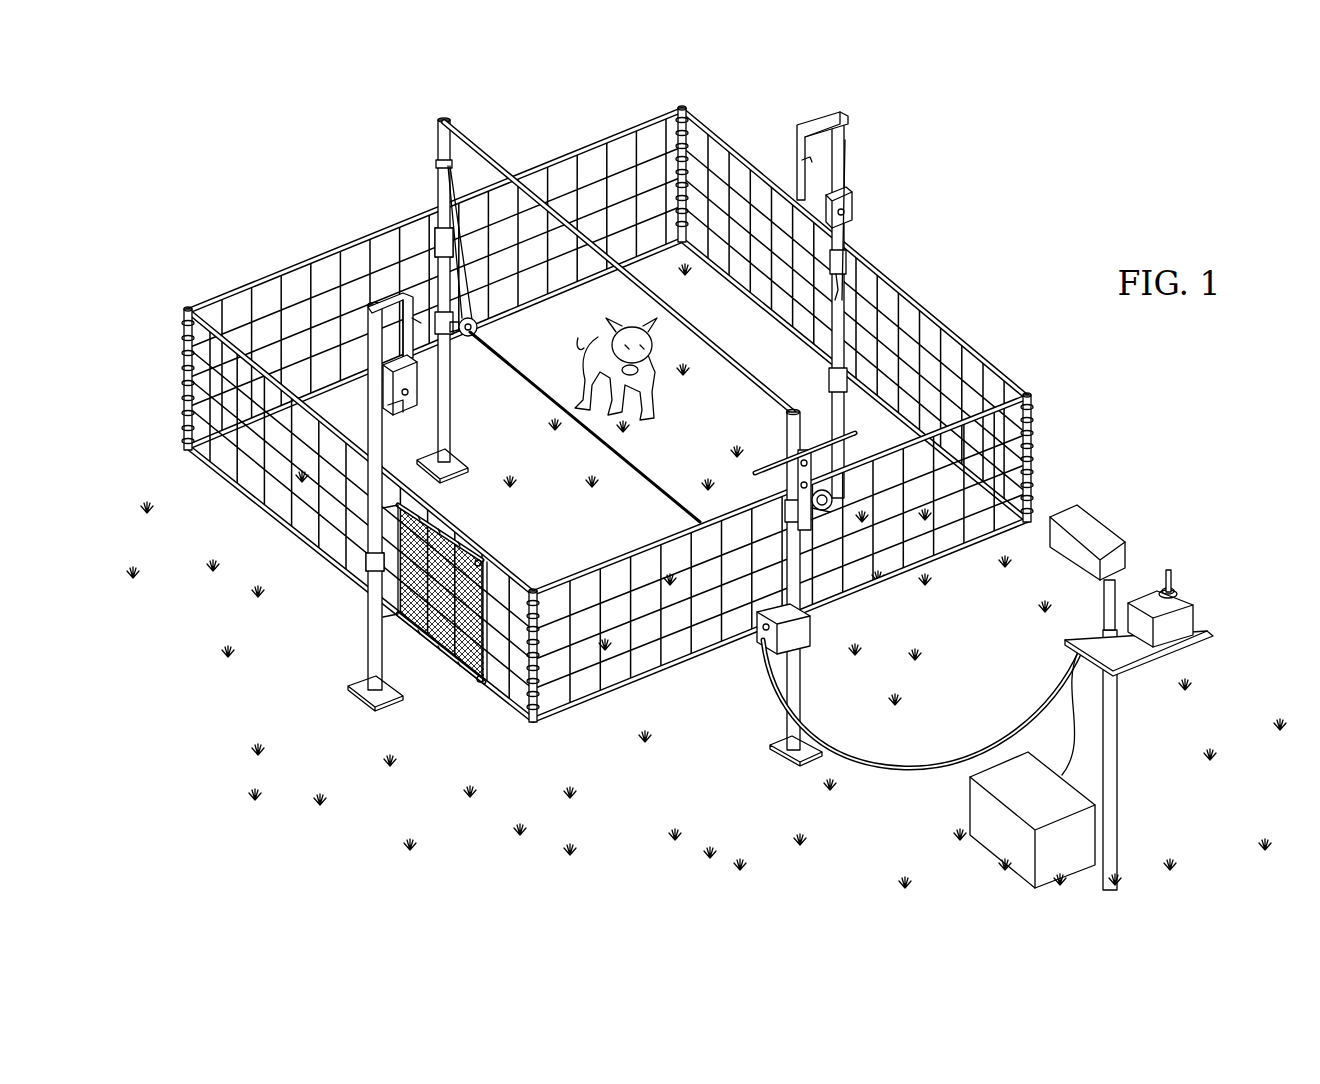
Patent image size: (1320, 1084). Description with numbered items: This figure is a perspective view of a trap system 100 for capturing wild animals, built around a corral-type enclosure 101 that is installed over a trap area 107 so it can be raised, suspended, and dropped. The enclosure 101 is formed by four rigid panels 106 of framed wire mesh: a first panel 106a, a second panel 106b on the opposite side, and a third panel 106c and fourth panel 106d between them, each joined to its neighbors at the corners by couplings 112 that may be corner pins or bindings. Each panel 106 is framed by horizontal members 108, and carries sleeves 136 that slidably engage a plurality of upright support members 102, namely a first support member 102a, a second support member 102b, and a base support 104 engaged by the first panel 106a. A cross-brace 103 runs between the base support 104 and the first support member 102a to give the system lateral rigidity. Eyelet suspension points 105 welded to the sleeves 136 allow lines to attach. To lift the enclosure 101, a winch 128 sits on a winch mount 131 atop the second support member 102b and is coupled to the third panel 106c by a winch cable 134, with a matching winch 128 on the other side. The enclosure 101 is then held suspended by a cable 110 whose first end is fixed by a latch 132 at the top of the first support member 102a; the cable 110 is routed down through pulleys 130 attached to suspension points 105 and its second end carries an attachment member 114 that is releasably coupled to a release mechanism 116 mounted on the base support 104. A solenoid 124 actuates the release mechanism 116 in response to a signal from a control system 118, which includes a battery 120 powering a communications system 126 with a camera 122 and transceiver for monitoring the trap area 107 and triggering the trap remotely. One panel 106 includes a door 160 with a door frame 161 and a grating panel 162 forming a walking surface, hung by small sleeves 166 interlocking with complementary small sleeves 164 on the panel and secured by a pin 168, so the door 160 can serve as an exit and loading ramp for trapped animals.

The trap system 100 is at (706, 480).
The enclosure 101 is at (608, 424).
The support members 102 is at (630, 347).
The first support member 102a is at (417, 288).
The second support member 102b is at (365, 680).
The cross-brace 103 is at (500, 166).
The base support 104 is at (785, 725).
The suspension points 105 is at (822, 285).
The panels 106 is at (608, 424).
The first panel 106a is at (922, 568).
The second panel 106b is at (400, 218).
The third panel 106c is at (250, 507).
The fourth panel 106d is at (907, 292).
The trap area 107 is at (534, 483).
The horizontal members 108 is at (195, 456).
The cable 110 is at (650, 481).
The couplings 112 is at (187, 306).
The attachment member 114 is at (835, 508).
The release mechanism 116 is at (813, 584).
The control system 118 is at (1154, 686).
The battery 120 is at (970, 812).
The camera 122 is at (1103, 523).
The solenoid 124 is at (810, 648).
The communications system 126 is at (1195, 607).
The winch 128 is at (838, 196).
The pulleys 130 is at (478, 331).
The winch mounts 131 is at (797, 158).
The latch 132 is at (440, 165).
The winch cable 134 is at (848, 262).
The sleeves 136 is at (850, 383).
The door 160 is at (435, 631).
The door frame 161 is at (492, 580).
The panel 162 is at (408, 600).
The complementary small sleeves 164 is at (462, 682).
The small sleeves 166 is at (440, 672).
The pin 168 is at (487, 560).